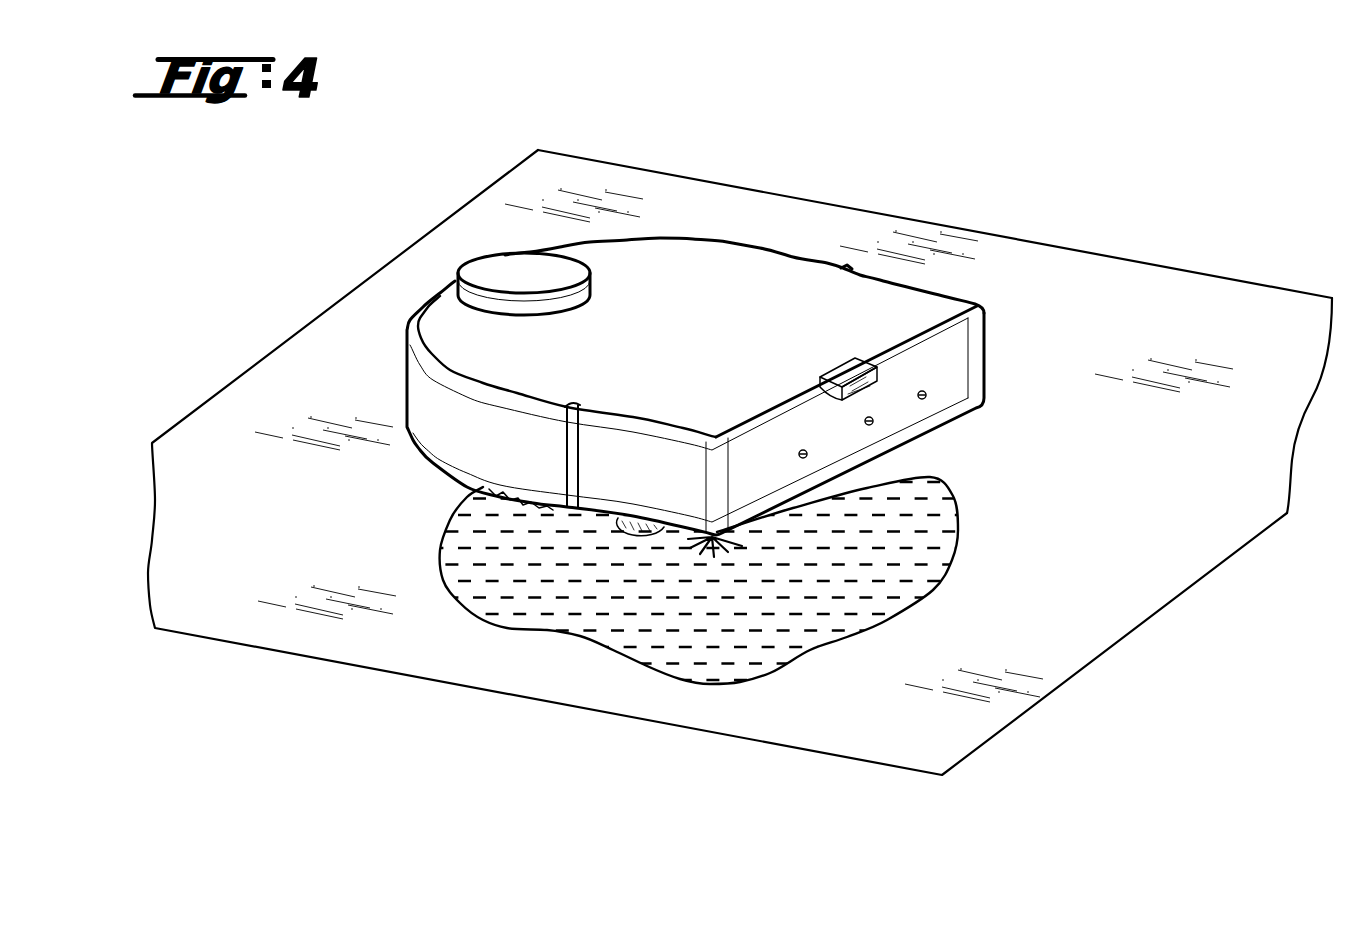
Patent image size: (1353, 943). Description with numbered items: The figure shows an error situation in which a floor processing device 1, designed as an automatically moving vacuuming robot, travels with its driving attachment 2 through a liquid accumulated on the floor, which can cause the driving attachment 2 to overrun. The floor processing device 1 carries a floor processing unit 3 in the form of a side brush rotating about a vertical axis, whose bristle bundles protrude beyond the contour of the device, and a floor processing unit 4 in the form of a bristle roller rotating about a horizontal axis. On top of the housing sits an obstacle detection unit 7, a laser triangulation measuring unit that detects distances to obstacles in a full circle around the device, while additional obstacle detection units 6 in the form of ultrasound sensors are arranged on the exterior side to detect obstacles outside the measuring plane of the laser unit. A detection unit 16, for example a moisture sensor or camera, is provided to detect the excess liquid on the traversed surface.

The floor processing device 1 is at (413, 287).
The driving attachment 2 is at (520, 503).
The floor processing unit 3 is at (708, 543).
The floor processing unit 4 is at (647, 532).
The obstacle detection units 6 is at (807, 455).
The obstacle detection unit 7 is at (505, 268).
The detection unit 16 is at (870, 382).